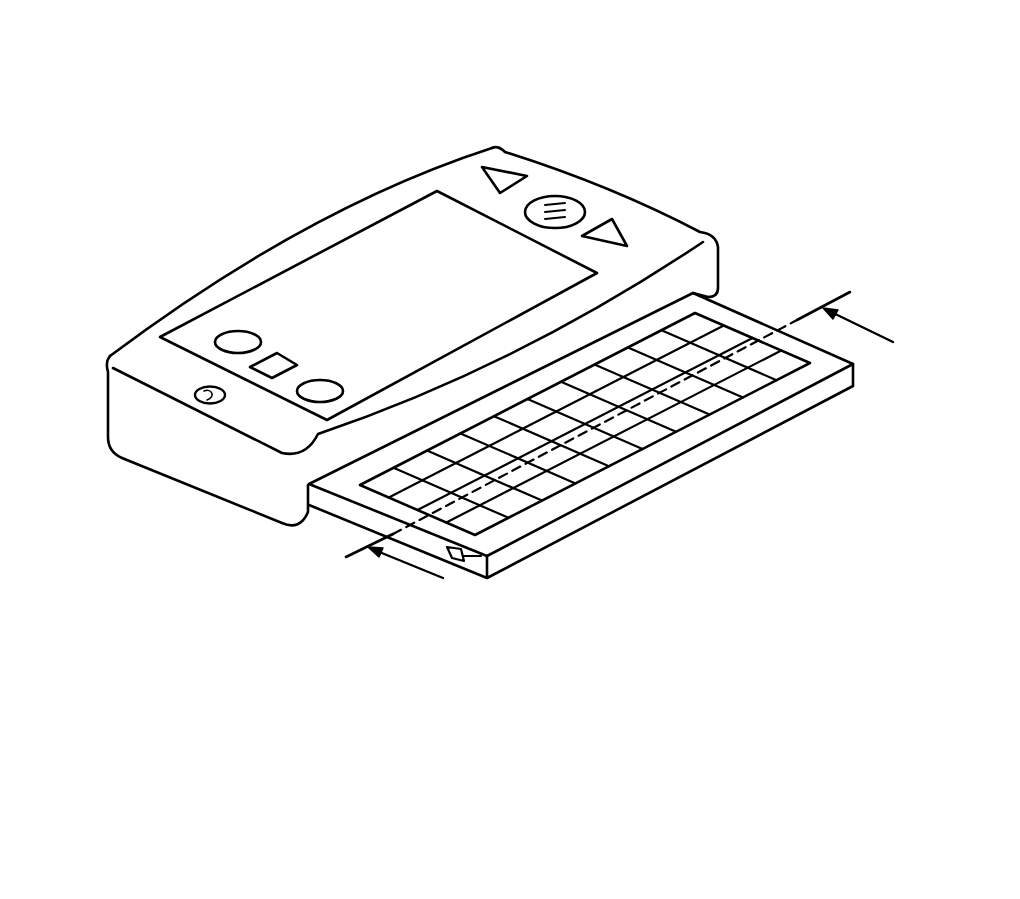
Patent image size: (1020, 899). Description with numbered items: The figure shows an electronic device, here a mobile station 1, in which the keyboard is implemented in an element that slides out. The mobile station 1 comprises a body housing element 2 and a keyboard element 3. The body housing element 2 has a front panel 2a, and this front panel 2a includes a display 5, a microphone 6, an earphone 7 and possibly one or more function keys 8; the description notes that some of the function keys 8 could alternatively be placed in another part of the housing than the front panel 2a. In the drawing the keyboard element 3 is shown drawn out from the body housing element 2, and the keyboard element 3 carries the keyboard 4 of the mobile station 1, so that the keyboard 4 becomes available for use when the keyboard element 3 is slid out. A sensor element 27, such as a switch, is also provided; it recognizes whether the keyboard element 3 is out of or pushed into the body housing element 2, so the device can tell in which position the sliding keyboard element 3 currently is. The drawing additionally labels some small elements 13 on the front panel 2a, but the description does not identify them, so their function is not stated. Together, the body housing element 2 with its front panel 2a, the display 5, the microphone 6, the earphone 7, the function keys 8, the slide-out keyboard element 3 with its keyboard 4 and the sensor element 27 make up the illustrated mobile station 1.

The mobile station 1 is at (362, 165).
The body housing element 2 is at (175, 462).
The front panel 2a is at (245, 273).
The keyboard element 3 is at (552, 532).
The keyboard 4 is at (603, 458).
The display 5 is at (313, 267).
The microphone 6 is at (198, 393).
The earphone 7 is at (550, 200).
The function keys 8 is at (507, 177).
The operation keys 13 is at (233, 340).
The sensor element 27 is at (492, 565).